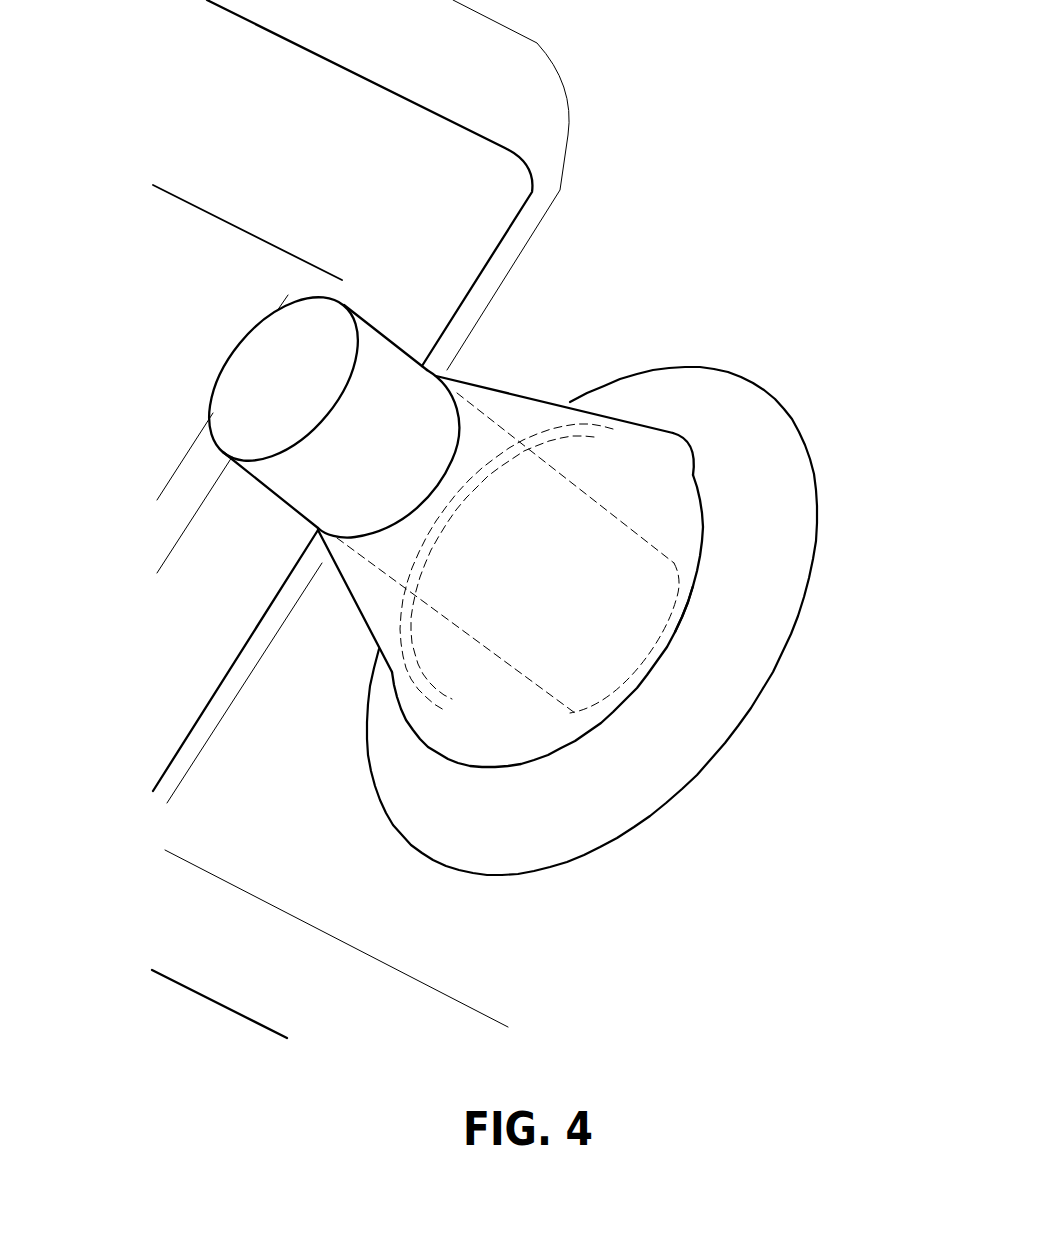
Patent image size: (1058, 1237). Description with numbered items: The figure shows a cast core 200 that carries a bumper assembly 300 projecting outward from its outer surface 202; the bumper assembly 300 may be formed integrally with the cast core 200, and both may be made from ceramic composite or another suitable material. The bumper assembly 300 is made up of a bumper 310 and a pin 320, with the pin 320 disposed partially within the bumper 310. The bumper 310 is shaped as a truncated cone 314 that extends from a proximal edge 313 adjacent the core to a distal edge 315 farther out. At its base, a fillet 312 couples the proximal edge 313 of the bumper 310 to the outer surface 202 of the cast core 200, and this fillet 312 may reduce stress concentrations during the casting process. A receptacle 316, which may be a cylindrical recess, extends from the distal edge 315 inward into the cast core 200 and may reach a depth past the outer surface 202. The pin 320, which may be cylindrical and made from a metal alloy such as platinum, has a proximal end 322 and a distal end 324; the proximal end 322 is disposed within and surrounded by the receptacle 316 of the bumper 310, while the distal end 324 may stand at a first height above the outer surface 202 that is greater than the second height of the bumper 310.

The cast core 200 is at (302, 828).
The outer surface 202 is at (702, 909).
The bumper assembly 300 is at (258, 276).
The bumper 310 is at (510, 406).
The fillet 312 is at (735, 688).
The proximal edge 313 is at (677, 435).
The truncated cone 314 is at (657, 495).
The distal edge 315 is at (457, 408).
The receptacle 316 is at (502, 667).
The pin 320 is at (408, 458).
The proximal end 322 is at (677, 613).
The distal end 324 is at (270, 402).